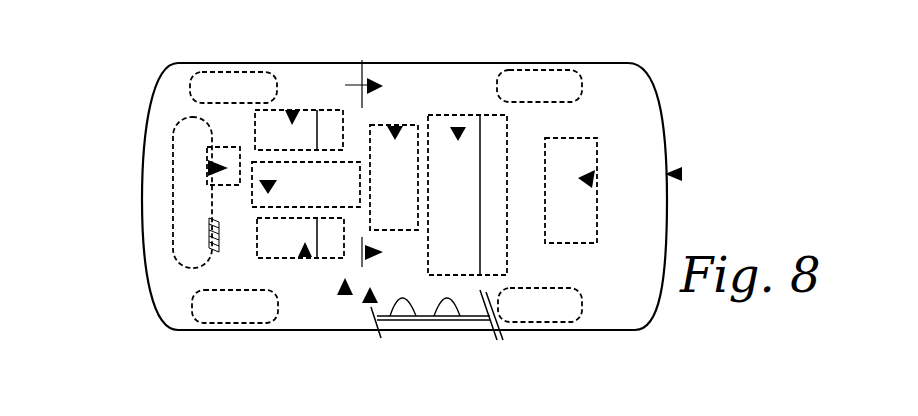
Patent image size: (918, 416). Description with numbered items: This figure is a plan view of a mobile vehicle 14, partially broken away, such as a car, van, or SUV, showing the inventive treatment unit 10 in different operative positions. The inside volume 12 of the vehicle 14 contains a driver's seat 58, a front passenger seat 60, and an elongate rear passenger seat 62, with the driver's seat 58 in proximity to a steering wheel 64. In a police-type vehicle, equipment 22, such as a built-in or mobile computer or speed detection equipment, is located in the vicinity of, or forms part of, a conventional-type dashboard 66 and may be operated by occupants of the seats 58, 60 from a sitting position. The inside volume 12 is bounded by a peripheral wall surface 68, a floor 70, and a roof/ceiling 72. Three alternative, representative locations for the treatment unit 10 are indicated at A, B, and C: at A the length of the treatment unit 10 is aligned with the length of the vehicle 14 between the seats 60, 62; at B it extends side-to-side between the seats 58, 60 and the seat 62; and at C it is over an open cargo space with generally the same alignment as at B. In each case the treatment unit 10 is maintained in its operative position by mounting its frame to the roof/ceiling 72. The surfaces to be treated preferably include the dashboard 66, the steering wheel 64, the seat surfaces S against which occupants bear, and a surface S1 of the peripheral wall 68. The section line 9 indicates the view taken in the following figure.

The treatment unit 10 is at (268, 185).
The inside volume 12 is at (370, 304).
The mobile vehicle 14 is at (680, 172).
The equipment 22 is at (207, 163).
The driver's seat 58 is at (310, 260).
The front passenger seat 60 is at (297, 107).
The elongate rear passenger seat 62 is at (458, 127).
The steering wheel 64 is at (207, 243).
The dashboard 66 is at (193, 190).
The peripheral wall surface 68 is at (443, 316).
The floor 70 is at (345, 297).
The roof/ceiling 72 is at (495, 338).
The seat surfaces S is at (262, 122).
The surface of the peripheral wall S1 is at (398, 316).
The section line 9 is at (362, 163).